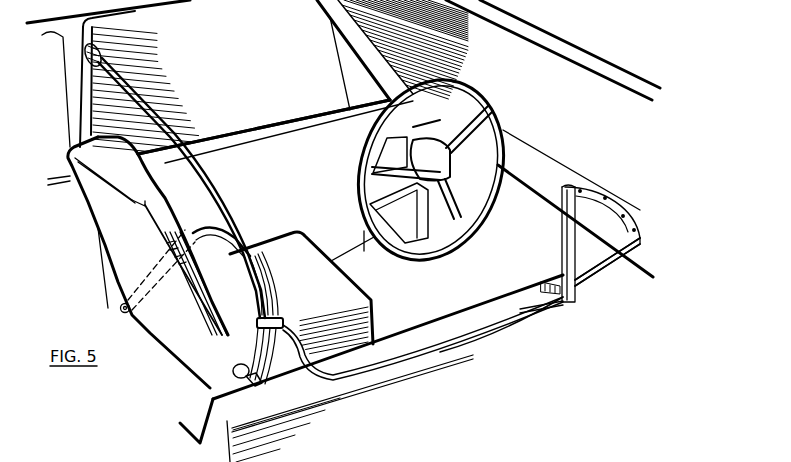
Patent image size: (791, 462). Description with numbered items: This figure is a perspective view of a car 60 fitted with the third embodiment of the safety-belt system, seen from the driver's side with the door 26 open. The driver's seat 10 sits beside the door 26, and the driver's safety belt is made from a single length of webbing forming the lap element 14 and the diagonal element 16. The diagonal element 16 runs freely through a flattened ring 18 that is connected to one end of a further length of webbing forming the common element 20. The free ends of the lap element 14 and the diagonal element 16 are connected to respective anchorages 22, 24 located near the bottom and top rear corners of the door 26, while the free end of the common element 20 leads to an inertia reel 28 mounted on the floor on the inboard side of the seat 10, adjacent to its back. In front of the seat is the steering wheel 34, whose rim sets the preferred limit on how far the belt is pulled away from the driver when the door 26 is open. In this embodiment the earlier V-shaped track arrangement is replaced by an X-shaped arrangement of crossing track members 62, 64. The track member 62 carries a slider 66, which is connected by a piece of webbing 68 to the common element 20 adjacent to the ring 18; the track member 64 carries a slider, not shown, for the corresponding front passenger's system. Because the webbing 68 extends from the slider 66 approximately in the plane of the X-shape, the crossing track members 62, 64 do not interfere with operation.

The driver's seat 10 is at (108, 218).
The lap element 14 is at (207, 228).
The diagonal element 16 is at (173, 135).
The flattened ring 18 is at (284, 312).
The common element 20 is at (280, 356).
The anchorage 22 is at (120, 314).
The anchorage 24 is at (84, 61).
The door 26 is at (267, 143).
The inertia reel 28 is at (248, 381).
The steering wheel 34 is at (502, 111).
The car 60 is at (544, 31).
The track member 62 is at (562, 238).
The track member 64 is at (600, 257).
The slider 66 is at (545, 291).
The webbing 68 is at (417, 361).